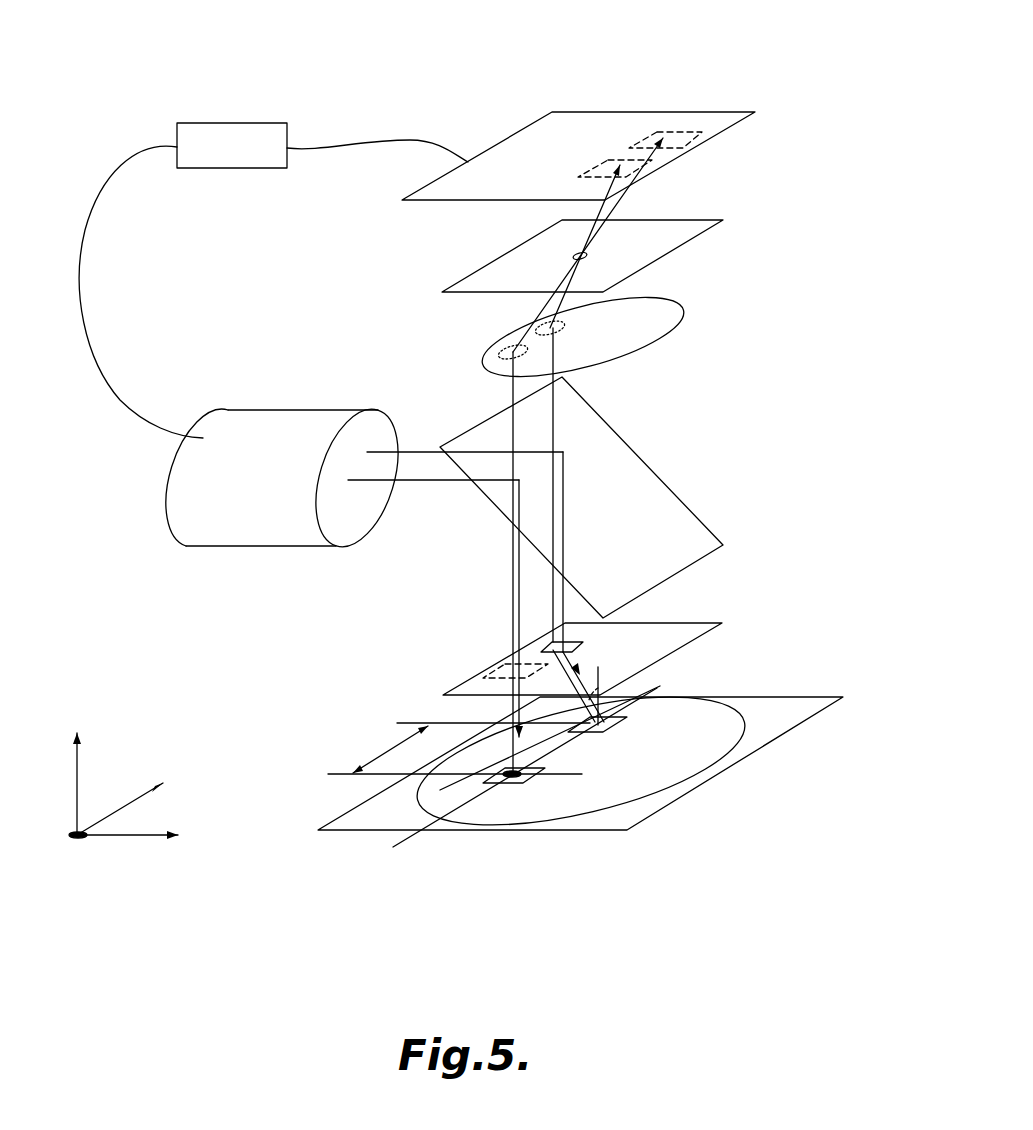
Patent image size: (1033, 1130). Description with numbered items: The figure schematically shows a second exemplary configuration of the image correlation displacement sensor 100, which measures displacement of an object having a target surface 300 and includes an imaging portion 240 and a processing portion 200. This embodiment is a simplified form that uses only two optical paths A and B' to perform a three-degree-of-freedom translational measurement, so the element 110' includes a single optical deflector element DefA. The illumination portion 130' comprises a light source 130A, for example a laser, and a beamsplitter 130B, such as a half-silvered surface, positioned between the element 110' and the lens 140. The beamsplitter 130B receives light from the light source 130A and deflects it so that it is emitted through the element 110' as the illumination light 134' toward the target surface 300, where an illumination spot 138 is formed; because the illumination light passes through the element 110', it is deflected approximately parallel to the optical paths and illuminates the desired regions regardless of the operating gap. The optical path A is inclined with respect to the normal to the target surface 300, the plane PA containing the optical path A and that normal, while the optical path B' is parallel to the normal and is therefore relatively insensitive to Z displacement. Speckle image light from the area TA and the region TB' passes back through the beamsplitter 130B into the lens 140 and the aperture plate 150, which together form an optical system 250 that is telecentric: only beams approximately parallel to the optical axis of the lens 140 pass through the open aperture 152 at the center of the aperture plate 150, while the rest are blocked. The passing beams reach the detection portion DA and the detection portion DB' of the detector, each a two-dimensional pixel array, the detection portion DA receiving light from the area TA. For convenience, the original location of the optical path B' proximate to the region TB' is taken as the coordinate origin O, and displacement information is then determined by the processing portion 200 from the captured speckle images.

The displacement sensor 100 is at (743, 55).
The processing portion 200 is at (215, 123).
The imaging portion 240 is at (198, 318).
The optical system 250 is at (263, 222).
The aperture plate 150 is at (500, 267).
The aperture 152 is at (588, 256).
The lens 140 is at (508, 332).
The illumination portion 130' is at (347, 568).
The light source 130A is at (300, 546).
The beamsplitter 130B is at (488, 498).
The element 110' is at (546, 659).
The illumination light 134' is at (555, 660).
The illumination spot 138 is at (648, 790).
The target surface 300 is at (627, 828).
The detection portion DB' is at (703, 147).
The detection portion DA is at (637, 178).
The optical path A is at (553, 320).
The optical path B' is at (468, 350).
The deflection element DefA is at (540, 648).
The plane PA is at (600, 692).
The area TA is at (615, 723).
The region TB' is at (558, 770).
The coordinate origin O is at (528, 778).